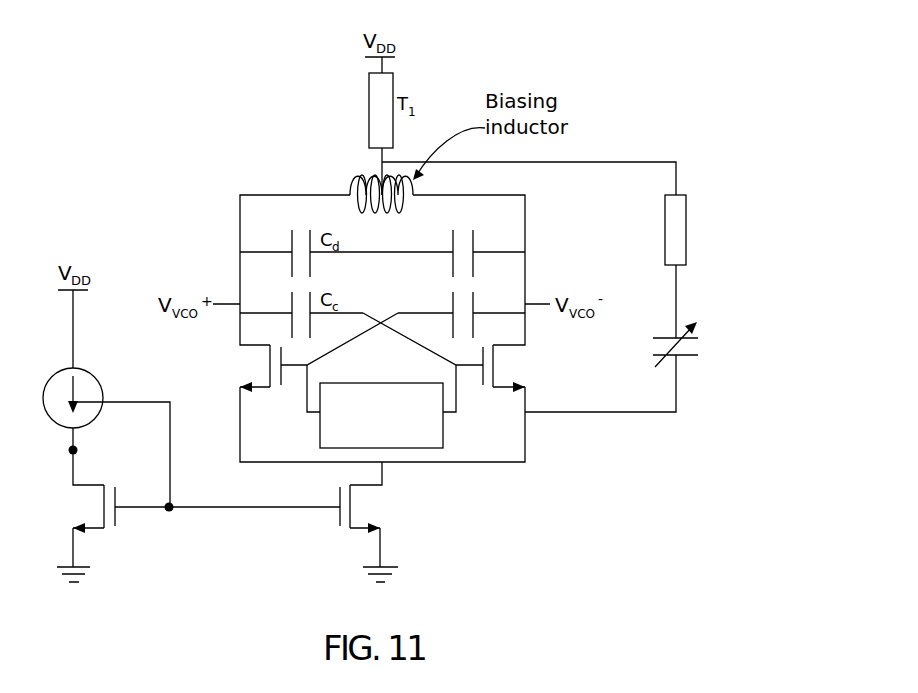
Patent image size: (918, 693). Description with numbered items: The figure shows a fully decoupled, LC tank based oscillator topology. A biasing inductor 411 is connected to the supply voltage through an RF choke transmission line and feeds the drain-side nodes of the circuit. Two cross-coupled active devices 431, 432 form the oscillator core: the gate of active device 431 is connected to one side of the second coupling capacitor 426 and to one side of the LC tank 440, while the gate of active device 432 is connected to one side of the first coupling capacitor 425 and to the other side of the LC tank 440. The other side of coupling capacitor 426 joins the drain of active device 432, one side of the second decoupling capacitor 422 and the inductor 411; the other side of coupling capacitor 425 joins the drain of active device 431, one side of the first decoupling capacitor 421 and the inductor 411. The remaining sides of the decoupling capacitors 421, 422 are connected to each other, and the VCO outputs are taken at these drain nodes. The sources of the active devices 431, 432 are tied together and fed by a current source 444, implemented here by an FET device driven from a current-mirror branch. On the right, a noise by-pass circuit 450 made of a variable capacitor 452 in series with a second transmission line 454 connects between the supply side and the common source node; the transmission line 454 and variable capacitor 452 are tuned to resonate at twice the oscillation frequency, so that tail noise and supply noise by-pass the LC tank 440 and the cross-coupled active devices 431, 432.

The inductor 411 is at (350, 183).
The capacitor Cd 421 is at (290, 243).
The capacitor Cd 422 is at (452, 243).
The capacitor Cc 425 is at (290, 306).
The capacitor Cc 426 is at (452, 306).
The active device 431 is at (258, 392).
The active device 432 is at (505, 392).
The LC tank 440 is at (385, 383).
The current source 444 is at (419, 517).
The noise by-pass circuit 450 is at (653, 233).
The variable capacitor 452 is at (687, 357).
The transmission line T2 454 is at (687, 212).